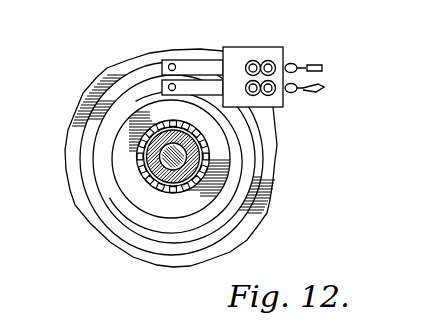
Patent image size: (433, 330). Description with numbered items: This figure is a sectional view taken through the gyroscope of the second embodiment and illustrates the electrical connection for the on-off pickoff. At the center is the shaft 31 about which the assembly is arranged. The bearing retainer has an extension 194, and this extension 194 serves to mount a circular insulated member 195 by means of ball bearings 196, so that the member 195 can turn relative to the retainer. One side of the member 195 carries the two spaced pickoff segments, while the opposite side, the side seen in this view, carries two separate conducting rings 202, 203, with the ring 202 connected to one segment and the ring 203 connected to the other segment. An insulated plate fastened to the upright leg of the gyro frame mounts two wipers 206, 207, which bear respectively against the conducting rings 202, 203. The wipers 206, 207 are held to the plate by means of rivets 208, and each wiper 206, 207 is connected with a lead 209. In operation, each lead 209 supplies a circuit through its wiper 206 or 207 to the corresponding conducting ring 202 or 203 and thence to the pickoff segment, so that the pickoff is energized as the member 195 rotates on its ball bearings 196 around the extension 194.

The shaft 31 is at (175, 153).
The extension 194 is at (161, 182).
The circular insulated member 195 is at (98, 235).
The ball bearings 196 is at (263, 203).
The conducting ring 202 is at (258, 170).
The conducting ring 203 is at (266, 186).
The wiper 206 is at (208, 66).
The wiper 207 is at (197, 80).
The rivets 208 is at (268, 88).
The lead 209 is at (316, 66).